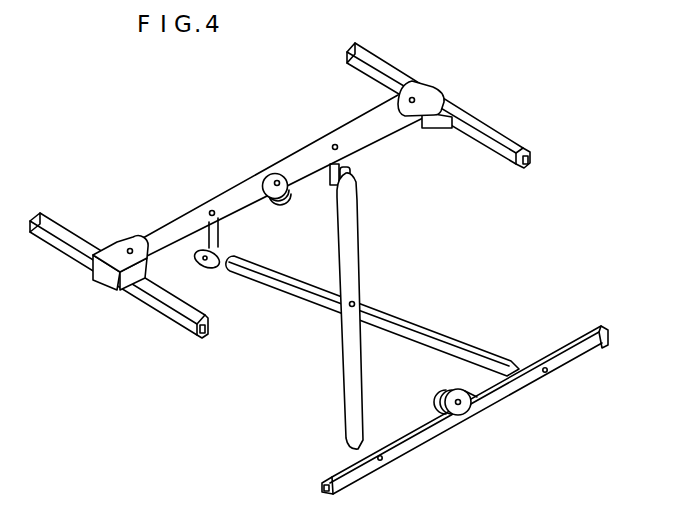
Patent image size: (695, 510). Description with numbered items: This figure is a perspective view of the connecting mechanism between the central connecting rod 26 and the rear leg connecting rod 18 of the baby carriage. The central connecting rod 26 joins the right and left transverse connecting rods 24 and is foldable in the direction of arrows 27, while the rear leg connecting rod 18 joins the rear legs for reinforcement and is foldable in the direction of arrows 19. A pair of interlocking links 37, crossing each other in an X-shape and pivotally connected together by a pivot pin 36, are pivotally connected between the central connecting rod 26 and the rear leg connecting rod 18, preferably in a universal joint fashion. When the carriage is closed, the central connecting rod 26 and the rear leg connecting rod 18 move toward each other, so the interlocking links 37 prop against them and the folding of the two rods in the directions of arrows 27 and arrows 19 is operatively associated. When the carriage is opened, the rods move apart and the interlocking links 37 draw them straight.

The rear leg connecting rod 18 is at (568, 347).
The arrows 19 is at (472, 425).
The transverse connecting rod 24 is at (383, 64).
The central connecting rod 26 is at (393, 136).
The arrows 27 is at (282, 95).
The pivot pin 36 is at (355, 304).
The interlocking links 37 is at (402, 338).